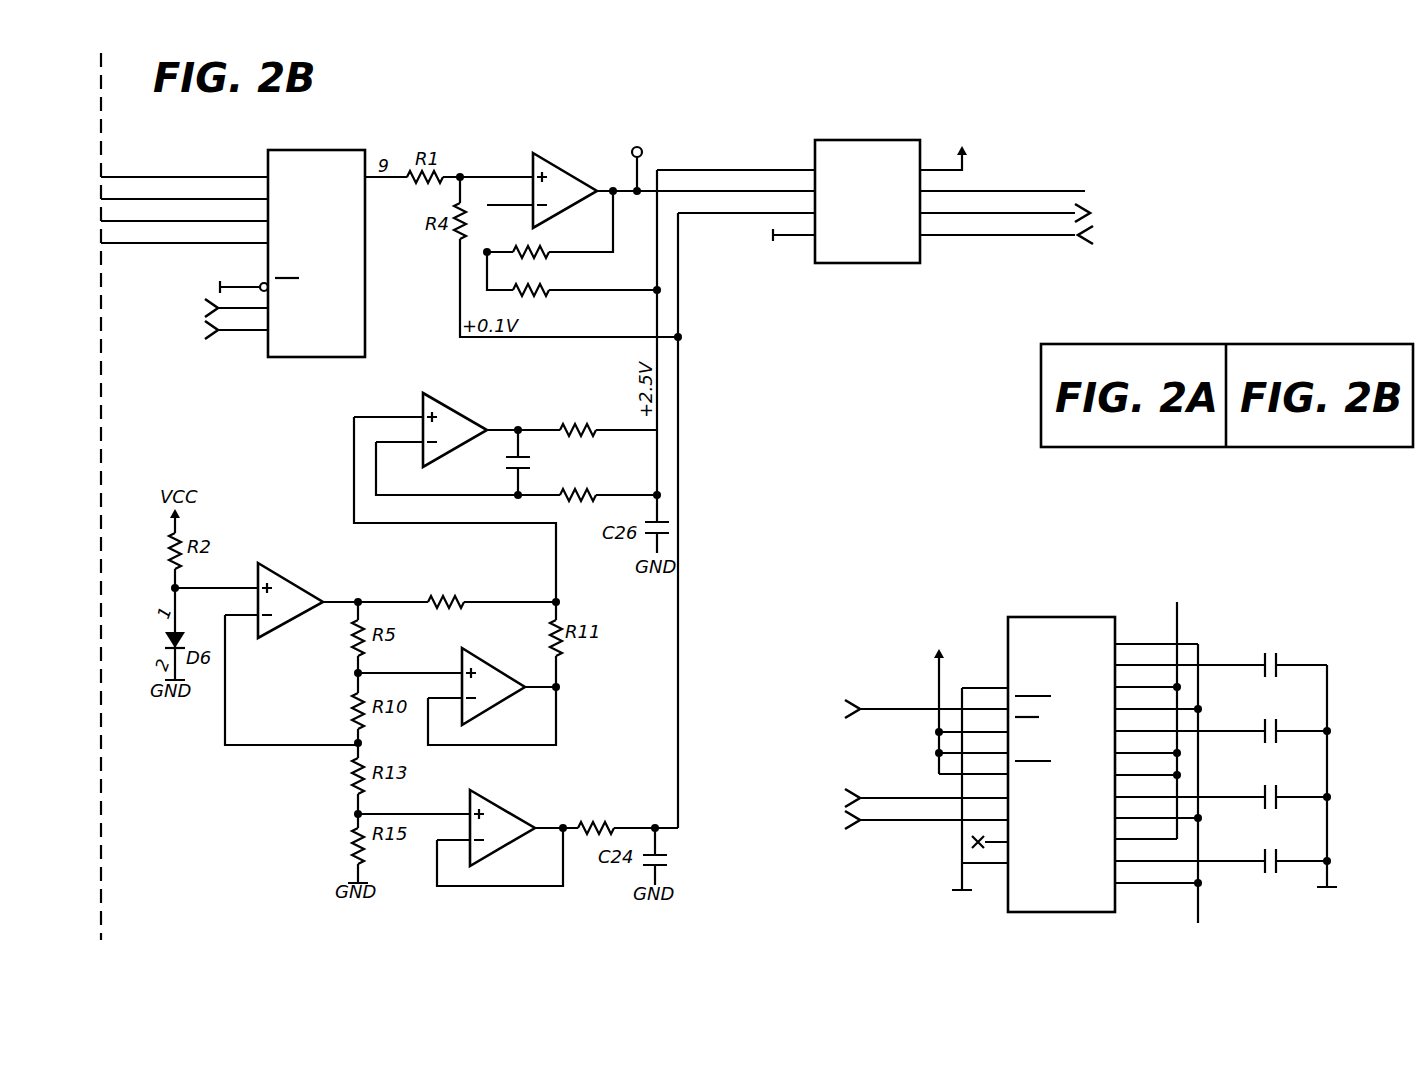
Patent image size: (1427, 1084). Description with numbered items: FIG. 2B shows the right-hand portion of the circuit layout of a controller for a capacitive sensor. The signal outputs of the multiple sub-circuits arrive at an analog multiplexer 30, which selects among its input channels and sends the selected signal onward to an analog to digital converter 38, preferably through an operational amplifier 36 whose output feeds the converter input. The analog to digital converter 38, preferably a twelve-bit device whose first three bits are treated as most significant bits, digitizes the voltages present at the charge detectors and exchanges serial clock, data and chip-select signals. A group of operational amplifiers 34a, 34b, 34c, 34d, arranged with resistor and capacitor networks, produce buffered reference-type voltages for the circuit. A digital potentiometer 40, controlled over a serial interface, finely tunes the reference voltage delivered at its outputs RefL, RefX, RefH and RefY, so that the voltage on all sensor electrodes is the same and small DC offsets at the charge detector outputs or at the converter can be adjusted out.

The analog multiplexer 30 is at (330, 150).
The operational amplifier 36 is at (560, 167).
The analog to digital converter 38 is at (865, 140).
The operational amplifier 34a is at (446, 407).
The operational amplifier 34b is at (287, 583).
The operational amplifier 34c is at (490, 666).
The operational amplifier 34d is at (500, 806).
The digital potentiometer 40 is at (1042, 617).